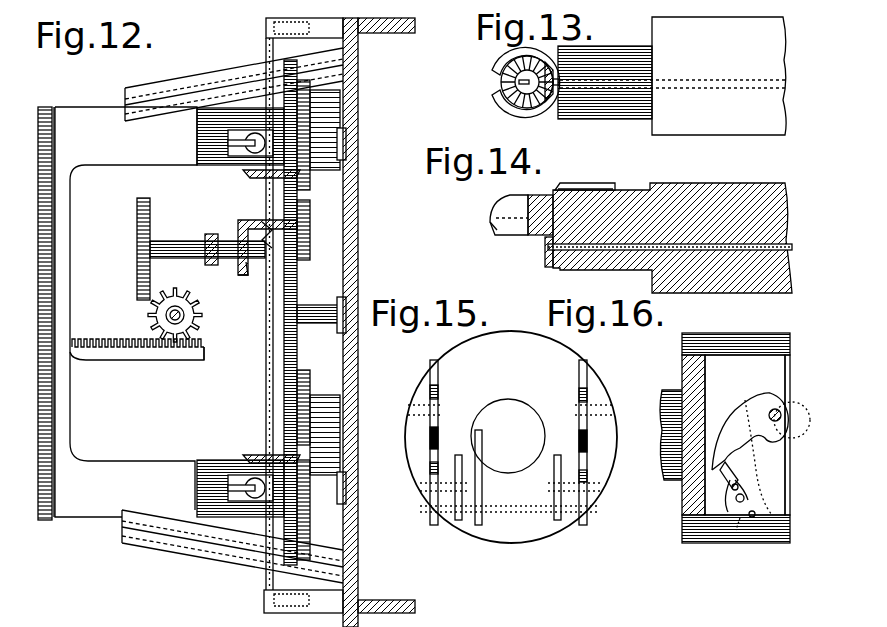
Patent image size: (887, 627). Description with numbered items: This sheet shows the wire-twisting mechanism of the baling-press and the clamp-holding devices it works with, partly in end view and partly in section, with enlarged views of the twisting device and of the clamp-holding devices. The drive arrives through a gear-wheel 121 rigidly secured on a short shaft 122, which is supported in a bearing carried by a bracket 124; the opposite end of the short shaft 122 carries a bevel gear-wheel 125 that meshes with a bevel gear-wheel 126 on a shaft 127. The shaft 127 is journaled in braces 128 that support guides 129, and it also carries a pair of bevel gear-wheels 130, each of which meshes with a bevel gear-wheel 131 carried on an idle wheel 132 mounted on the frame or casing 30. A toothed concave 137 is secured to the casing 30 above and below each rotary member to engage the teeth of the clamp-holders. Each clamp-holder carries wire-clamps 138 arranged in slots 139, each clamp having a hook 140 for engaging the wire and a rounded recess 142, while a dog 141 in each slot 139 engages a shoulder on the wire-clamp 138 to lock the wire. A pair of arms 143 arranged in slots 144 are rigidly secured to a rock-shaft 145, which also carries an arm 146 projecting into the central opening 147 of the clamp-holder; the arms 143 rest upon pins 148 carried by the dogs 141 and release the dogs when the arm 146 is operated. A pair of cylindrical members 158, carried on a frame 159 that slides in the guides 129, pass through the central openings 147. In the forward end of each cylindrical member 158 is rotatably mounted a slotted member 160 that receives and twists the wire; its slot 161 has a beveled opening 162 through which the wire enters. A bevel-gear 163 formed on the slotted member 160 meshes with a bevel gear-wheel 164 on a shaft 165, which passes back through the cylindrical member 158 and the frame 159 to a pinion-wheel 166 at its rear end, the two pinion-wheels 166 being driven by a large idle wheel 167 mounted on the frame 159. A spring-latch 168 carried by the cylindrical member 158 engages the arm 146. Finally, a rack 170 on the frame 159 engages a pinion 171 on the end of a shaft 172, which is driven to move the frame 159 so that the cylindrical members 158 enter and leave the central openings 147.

In FIG. 12, the frame or casing 30 is at (352, 345).
In FIG. 12, the gear-wheel 121 is at (145, 252).
In FIG. 12, the short shaft 122 is at (182, 244).
In FIG. 12, the bracket 124 is at (212, 263).
In FIG. 12, the bevel gear-wheel 125 is at (246, 272).
In FIG. 12, the bevel gear-wheel 126 is at (258, 222).
In FIG. 12, the shaft 127 is at (270, 398).
In FIG. 12, the braces 128 is at (222, 78).
In FIG. 12, the guides 129 is at (200, 112).
In FIG. 12, the bevel gear-wheels 130 is at (248, 174).
In FIG. 12, the bevel gear-wheel 131 is at (313, 137).
In FIG. 12, the idle wheel 132 is at (300, 120).
In FIG. 12, the toothed concave 137 is at (350, 45).
In FIG. 15, the wire-clamps 138 is at (430, 427).
In FIG. 16, the wire-clamps 138 is at (745, 410).
In FIG. 15, the slots 139 is at (438, 372).
In FIG. 16, the slots 139 is at (770, 383).
In FIG. 16, the hook 140 is at (770, 485).
In FIG. 16, the dog 141 is at (720, 505).
In FIG. 16, the rounded recess 142 is at (722, 470).
In FIG. 15, the arms 143 is at (558, 514).
In FIG. 16, the arms 143 is at (740, 520).
In FIG. 15, the slots 144 is at (460, 455).
In FIG. 15, the rock-shaft 145 is at (511, 512).
In FIG. 16, the rock-shaft 145 is at (752, 518).
In FIG. 15, the arm 146 is at (482, 446).
In FIG. 15, the central opening 147 is at (508, 436).
In FIG. 15, the pins 148 is at (452, 507).
In FIG. 12, the cylindrical members 158 is at (205, 468).
In FIG. 13, the cylindrical members 158 is at (630, 56).
In FIG. 14, the cylindrical members 158 is at (642, 190).
In FIG. 12, the frame 159 is at (126, 312).
In FIG. 14, the slotted member 160 is at (520, 228).
In FIG. 13, the slot 161 is at (527, 86).
In FIG. 13, the beveled opening 162 is at (500, 84).
In FIG. 14, the bevel-gear 163 is at (510, 236).
In FIG. 14, the bevel gear-wheel 164 is at (547, 264).
In FIG. 14, the shaft 165 is at (618, 251).
In FIG. 12, the pinion-wheel 166 is at (46, 128).
In FIG. 12, the large idle wheel 167 is at (45, 291).
In FIG. 14, the spring-latch 168 is at (590, 179).
In FIG. 12, the rack 170 is at (142, 352).
In FIG. 12, the pinion 171 is at (156, 327).
In FIG. 12, the shaft 172 is at (205, 352).